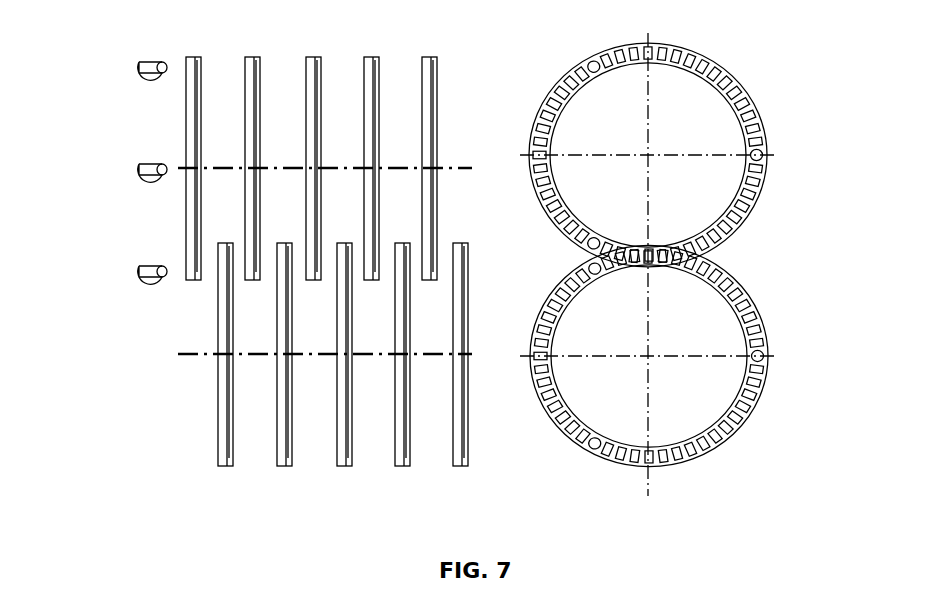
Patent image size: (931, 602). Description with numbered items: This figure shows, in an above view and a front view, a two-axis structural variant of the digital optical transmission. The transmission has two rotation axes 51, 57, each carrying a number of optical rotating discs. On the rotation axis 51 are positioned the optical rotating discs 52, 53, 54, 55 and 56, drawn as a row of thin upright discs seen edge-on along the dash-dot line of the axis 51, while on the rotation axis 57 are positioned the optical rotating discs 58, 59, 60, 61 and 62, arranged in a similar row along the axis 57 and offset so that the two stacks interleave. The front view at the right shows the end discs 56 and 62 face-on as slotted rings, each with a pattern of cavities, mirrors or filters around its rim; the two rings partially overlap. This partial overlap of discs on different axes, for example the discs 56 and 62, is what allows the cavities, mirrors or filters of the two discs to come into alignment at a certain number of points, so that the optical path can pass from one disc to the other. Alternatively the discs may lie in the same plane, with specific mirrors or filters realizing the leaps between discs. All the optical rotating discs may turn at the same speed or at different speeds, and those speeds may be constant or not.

The rotation axis 51 is at (452, 166).
The optical rotating disc 52 is at (196, 63).
The optical rotating disc 53 is at (255, 63).
The optical rotating disc 54 is at (316, 63).
The optical rotating disc 55 is at (374, 63).
The optical rotating disc 56 is at (432, 63).
The rotation axis 57 is at (470, 352).
The optical rotating disc 58 is at (228, 462).
The optical rotating disc 59 is at (287, 462).
The optical rotating disc 60 is at (347, 462).
The optical rotating disc 61 is at (405, 462).
The optical rotating disc 62 is at (463, 462).